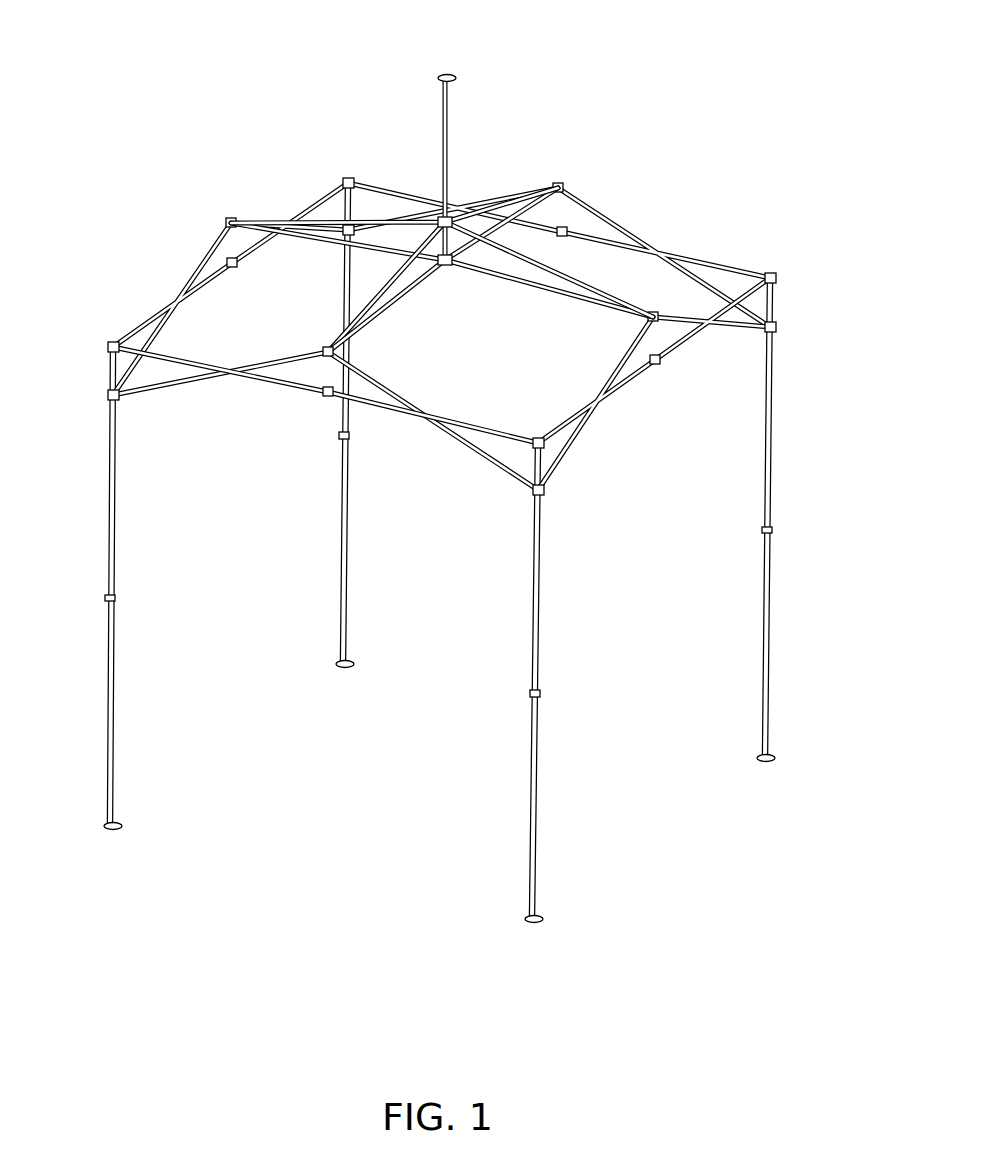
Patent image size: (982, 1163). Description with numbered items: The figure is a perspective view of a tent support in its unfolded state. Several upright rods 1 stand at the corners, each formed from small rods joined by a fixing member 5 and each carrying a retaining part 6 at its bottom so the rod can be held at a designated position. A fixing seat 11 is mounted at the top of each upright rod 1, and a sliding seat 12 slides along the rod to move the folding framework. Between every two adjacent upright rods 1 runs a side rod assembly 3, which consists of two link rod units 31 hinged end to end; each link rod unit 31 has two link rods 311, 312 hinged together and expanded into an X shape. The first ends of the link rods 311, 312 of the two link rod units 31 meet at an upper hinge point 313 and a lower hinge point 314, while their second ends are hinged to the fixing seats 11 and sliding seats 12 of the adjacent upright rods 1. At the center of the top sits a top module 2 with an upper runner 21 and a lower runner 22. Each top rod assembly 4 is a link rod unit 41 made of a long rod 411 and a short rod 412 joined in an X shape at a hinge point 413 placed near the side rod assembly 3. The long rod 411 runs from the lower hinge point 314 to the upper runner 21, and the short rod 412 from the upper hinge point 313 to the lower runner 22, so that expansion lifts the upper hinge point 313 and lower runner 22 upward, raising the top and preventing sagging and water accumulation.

The upright rod 1 is at (114, 497).
The fixing seat 11 is at (113, 341).
The sliding seat 12 is at (545, 492).
The top module 2 is at (423, 134).
The upper runner 21 is at (447, 223).
The lower runner 22 is at (435, 220).
The side rod assembly 3 is at (230, 385).
The link rod unit 31 is at (325, 422).
The link rod 311 is at (355, 485).
The link rod 312 is at (397, 415).
The upper hinge point 313 is at (327, 350).
The lower hinge point 314 is at (347, 425).
The top rod assembly 4 is at (442, 292).
The link rod unit 41 is at (442, 292).
The long rod 411 is at (380, 345).
The short rod 412 is at (430, 278).
The hinge point 413 is at (409, 309).
The fixing member 5 is at (541, 694).
The retaining part 6 is at (541, 916).